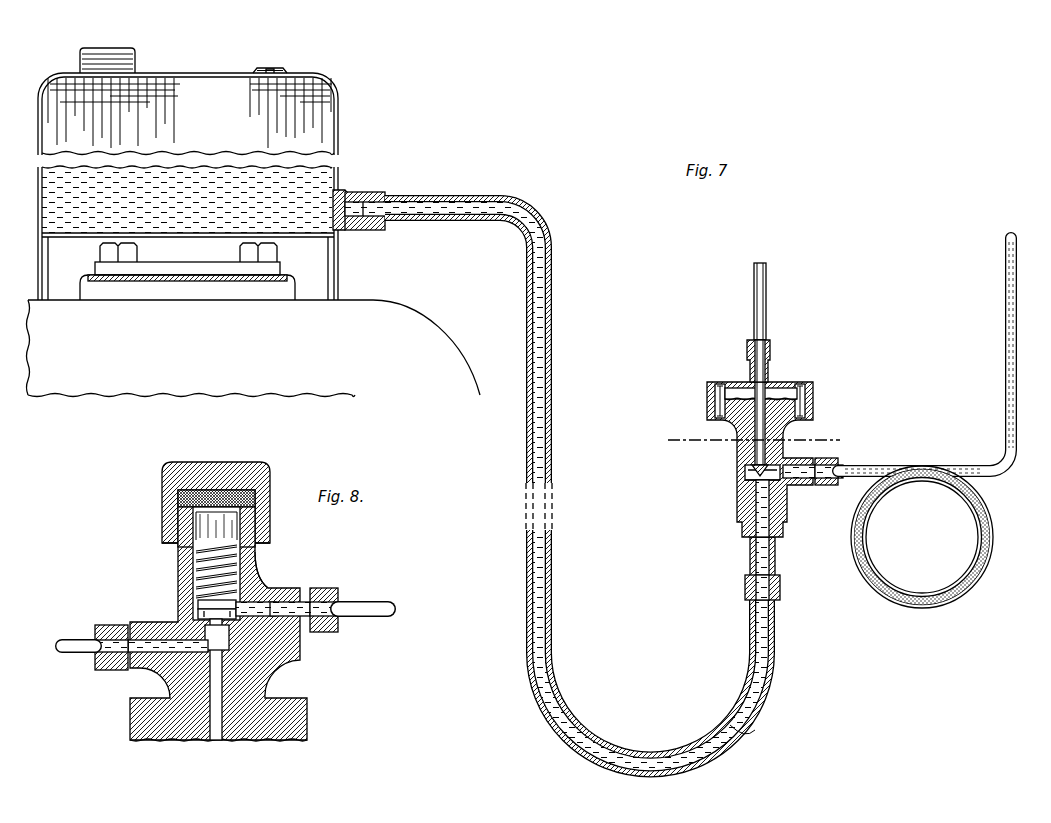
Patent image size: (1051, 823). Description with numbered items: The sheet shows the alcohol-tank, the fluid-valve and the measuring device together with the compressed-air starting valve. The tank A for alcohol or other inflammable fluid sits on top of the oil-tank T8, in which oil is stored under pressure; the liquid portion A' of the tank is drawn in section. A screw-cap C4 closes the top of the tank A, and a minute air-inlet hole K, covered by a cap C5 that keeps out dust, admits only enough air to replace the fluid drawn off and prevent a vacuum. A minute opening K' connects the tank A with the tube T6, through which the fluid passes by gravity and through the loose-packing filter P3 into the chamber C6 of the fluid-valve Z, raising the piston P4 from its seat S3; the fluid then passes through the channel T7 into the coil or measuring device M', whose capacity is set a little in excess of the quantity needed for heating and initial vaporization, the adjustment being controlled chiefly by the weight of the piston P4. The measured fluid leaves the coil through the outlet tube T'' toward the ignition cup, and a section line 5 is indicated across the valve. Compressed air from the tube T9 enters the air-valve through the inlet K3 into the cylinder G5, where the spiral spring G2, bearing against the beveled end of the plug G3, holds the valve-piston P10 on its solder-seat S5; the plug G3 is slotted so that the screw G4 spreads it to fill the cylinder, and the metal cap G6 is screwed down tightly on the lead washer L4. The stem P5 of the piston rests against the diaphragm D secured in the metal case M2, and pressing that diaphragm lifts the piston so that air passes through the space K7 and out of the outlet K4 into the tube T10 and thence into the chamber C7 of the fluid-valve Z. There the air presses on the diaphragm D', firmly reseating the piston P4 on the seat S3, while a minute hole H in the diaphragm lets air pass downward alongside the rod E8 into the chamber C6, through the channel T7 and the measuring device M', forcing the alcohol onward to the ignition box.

In FIG. 7, the tank A is at (188, 114).
In FIG. 7, the tank liquid chamber A' is at (172, 233).
In FIG. 7, the screw-cap C4 is at (137, 62).
In FIG. 7, the cap C5 is at (288, 70).
In FIG. 7, the air-inlet hole K is at (272, 54).
In FIG. 7, the opening K' is at (361, 197).
In FIG. 7, the tube T6 is at (553, 217).
In FIG. 7, the oil-tank T8 is at (204, 340).
In FIG. 7, the loose-packing filter P3 is at (736, 728).
In FIG. 7, the tube T10 is at (766, 292).
In FIG. 8, the tube T10 is at (70, 652).
In FIG. 7, the minute hole H is at (742, 385).
In FIG. 7, the diaphragm D' is at (765, 379).
In FIG. 7, the chamber C7 is at (800, 390).
In FIG. 7, the rod E8 is at (765, 432).
In FIG. 7, the section line 5 is at (758, 441).
In FIG. 7, the fluid-valve Z is at (737, 450).
In FIG. 7, the channel T7 is at (752, 470).
In FIG. 7, the chamber C6 is at (745, 478).
In FIG. 7, the seat S3 is at (740, 495).
In FIG. 7, the piston P4 is at (781, 480).
In FIG. 7, the outlet tube T'' is at (925, 355).
In FIG. 7, the measuring device M' is at (922, 537).
In FIG. 8, the metal case M2 is at (308, 713).
In FIG. 8, the metal cap G6 is at (205, 460).
In FIG. 8, the lead washer L4 is at (212, 490).
In FIG. 8, the screw G4 is at (245, 490).
In FIG. 8, the plug G3 is at (166, 540).
In FIG. 8, the spiral spring G2 is at (178, 563).
In FIG. 8, the cylinder G5 is at (262, 570).
In FIG. 8, the valve-piston P10 is at (198, 604).
In FIG. 8, the solder-seat S5 is at (198, 614).
In FIG. 8, the diaphragm D is at (227, 700).
In FIG. 8, the stem P5 is at (238, 640).
In FIG. 8, the space K7 is at (260, 625).
In FIG. 8, the inlet K3 is at (275, 590).
In FIG. 8, the tube T9 is at (370, 617).
In FIG. 8, the outlet K4 is at (135, 666).